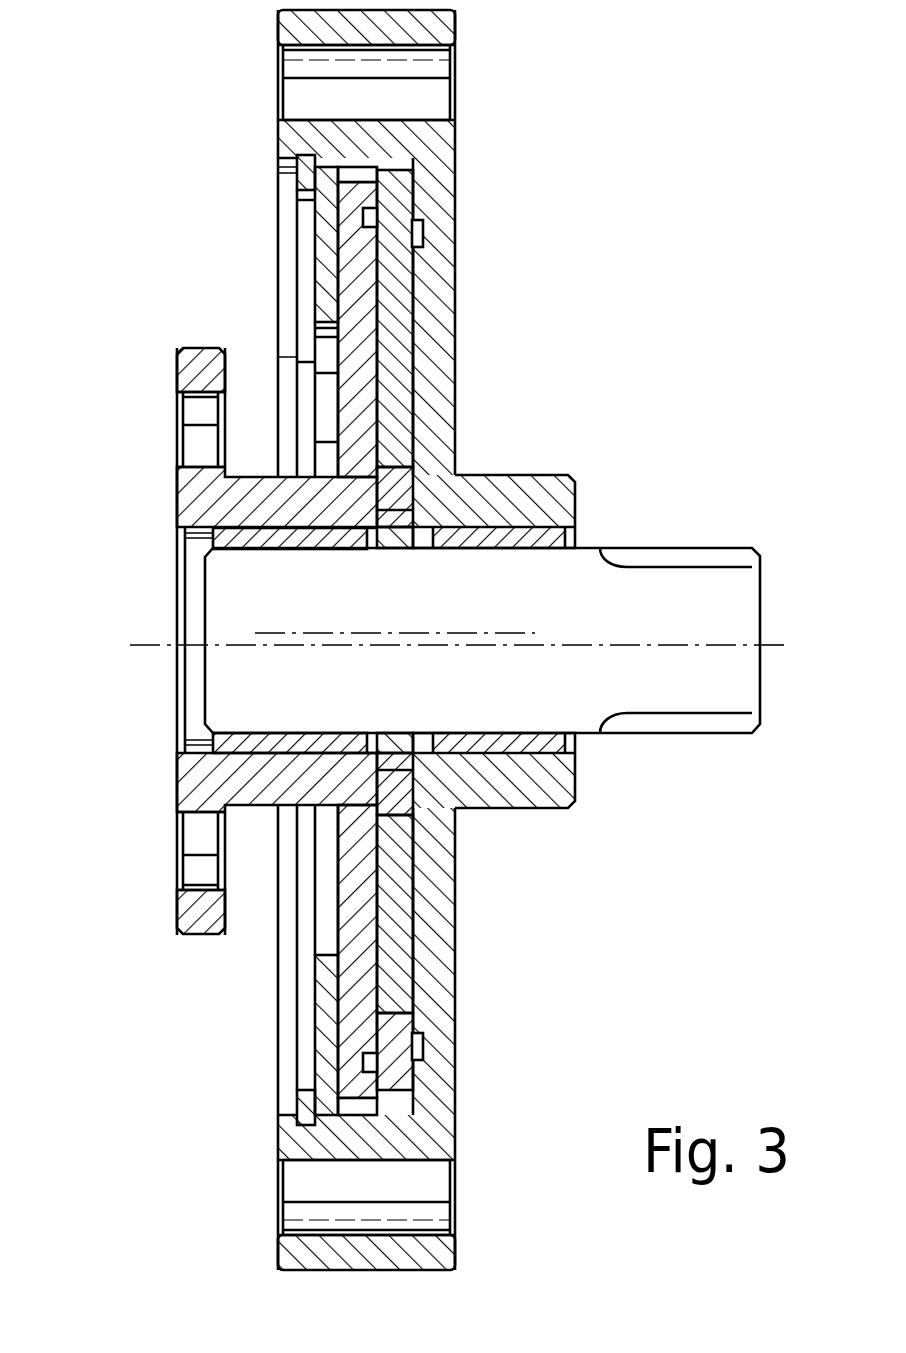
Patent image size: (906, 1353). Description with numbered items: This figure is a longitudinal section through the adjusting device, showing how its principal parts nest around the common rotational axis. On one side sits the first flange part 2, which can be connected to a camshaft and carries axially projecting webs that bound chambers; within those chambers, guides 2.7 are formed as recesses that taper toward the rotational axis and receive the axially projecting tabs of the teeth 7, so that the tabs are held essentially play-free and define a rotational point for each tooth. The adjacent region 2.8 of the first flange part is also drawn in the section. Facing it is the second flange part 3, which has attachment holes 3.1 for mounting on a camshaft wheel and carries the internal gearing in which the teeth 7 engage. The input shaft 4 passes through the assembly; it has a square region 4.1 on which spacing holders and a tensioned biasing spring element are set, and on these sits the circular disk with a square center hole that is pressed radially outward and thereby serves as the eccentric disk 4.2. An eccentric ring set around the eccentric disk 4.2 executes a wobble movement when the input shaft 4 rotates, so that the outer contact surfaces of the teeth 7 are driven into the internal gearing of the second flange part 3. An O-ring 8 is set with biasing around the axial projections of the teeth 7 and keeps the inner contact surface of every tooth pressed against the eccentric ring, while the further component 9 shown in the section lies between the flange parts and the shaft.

The first flange part 2 is at (202, 587).
The guides 2.7 is at (200, 373).
The toothing of flange 2.8 is at (200, 415).
The second flange part 3 is at (435, 640).
The attachment holes 3.1 is at (433, 100).
The input shaft 4 is at (690, 600).
The square region 4.1 is at (393, 548).
The eccentric disk 4.2 is at (458, 818).
The teeth 7 is at (410, 185).
The O-ring 8 is at (417, 222).
The bearing 9 is at (317, 243).